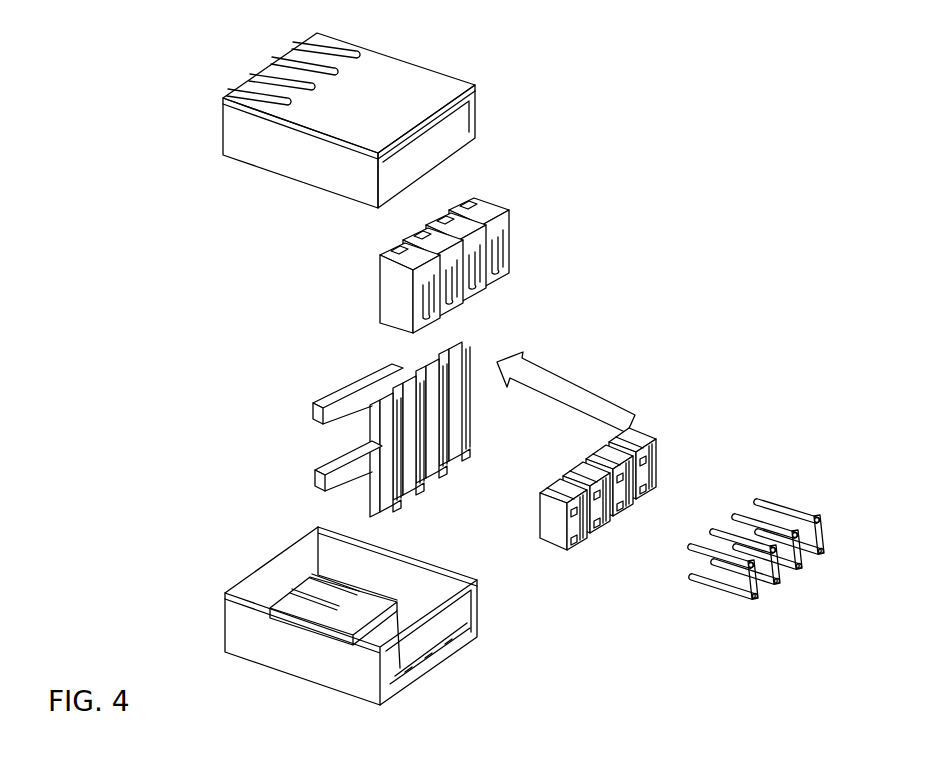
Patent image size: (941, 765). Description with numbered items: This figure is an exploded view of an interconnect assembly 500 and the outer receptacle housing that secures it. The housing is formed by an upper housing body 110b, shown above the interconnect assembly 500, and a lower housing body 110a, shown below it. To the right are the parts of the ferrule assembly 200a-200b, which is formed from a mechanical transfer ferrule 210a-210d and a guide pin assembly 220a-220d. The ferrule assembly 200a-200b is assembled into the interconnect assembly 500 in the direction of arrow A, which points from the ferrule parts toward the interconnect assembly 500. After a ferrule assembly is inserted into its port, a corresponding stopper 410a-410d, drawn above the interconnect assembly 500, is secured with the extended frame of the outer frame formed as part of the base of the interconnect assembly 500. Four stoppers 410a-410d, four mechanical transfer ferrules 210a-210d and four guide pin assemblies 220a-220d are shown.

The lower housing body 110a is at (333, 658).
The upper housing body 110b is at (401, 118).
The stoppers 410a-410d is at (518, 192).
The interconnect assembly 500 is at (332, 355).
The ferrule assembly 200a-200b is at (736, 502).
The mechanical transfer ferrule 210a-210d is at (557, 532).
The guide pin assembly 220a-220d is at (870, 508).
The arrow A is at (566, 366).